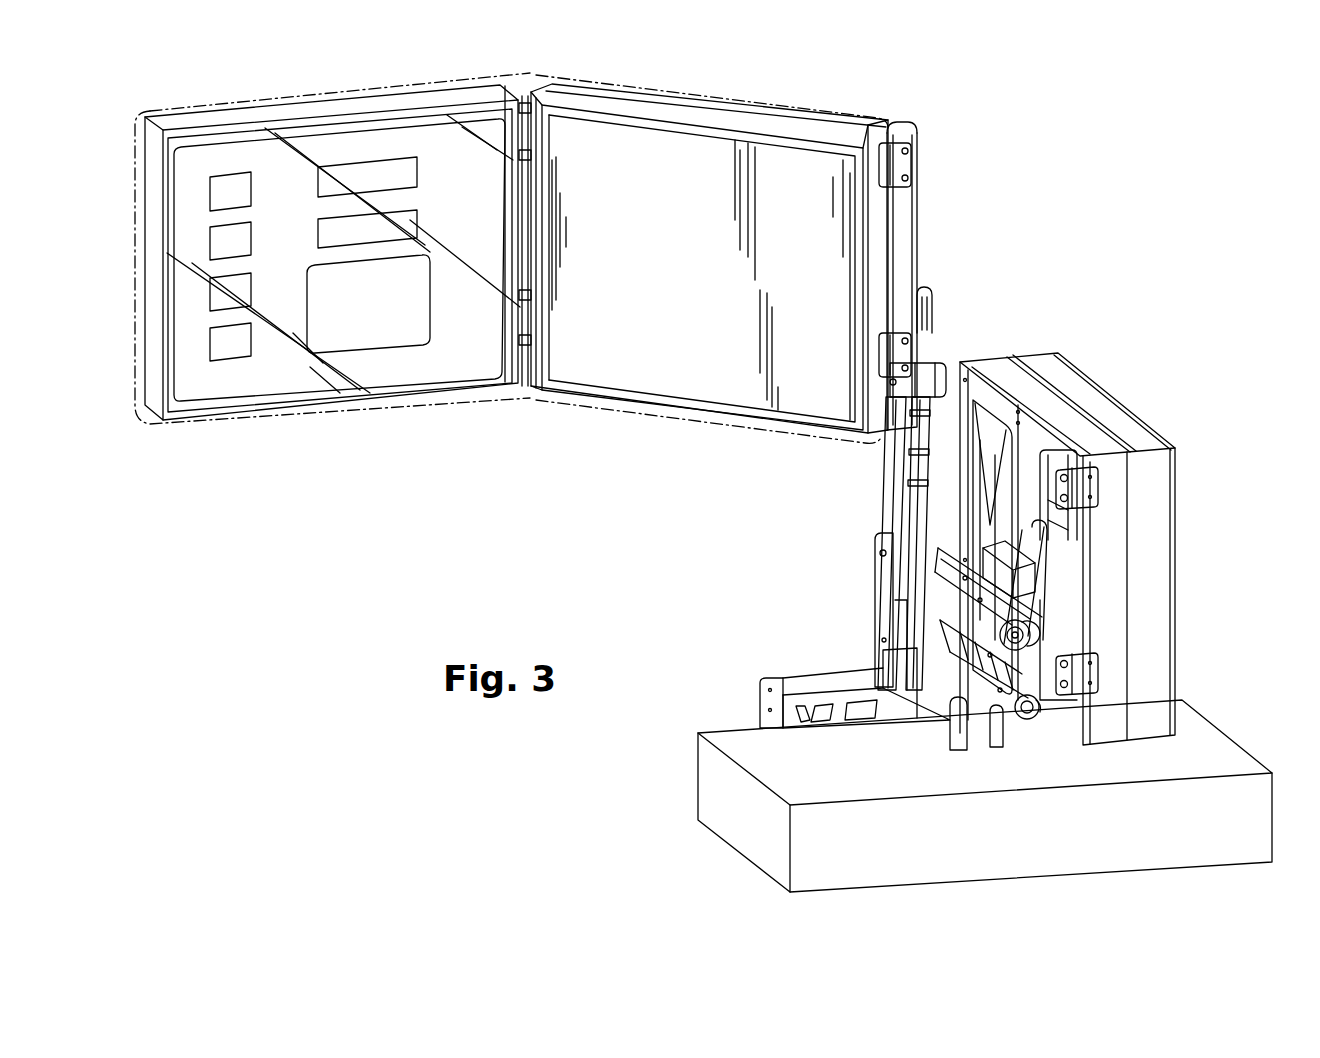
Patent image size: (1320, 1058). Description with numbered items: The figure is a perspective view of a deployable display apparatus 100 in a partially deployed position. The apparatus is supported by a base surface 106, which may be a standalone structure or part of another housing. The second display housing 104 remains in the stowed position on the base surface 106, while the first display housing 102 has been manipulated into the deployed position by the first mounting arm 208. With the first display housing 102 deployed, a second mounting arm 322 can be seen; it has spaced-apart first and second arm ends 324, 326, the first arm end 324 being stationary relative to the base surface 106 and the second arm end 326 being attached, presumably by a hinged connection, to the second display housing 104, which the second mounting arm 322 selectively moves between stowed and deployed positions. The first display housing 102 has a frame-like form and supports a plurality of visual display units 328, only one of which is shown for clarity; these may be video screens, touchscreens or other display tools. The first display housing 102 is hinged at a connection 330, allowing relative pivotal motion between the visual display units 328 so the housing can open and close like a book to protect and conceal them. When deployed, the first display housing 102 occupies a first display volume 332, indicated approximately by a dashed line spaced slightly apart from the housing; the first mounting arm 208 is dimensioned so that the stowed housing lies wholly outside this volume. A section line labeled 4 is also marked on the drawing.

The deployable display apparatus 100 is at (1167, 393).
The first display housing 102 is at (676, 408).
The second display housing 104 is at (1062, 377).
The base surface 106 is at (1217, 760).
The first mounting arm 208 is at (888, 495).
The second mounting arm 322 is at (998, 562).
The first arm end 324 is at (948, 649).
The second arm end 326 is at (1087, 564).
The visual display unit 328 is at (237, 145).
The connection 330 is at (517, 308).
The first display volume 332 is at (793, 108).
The section line 4- 4 is at (860, 665).